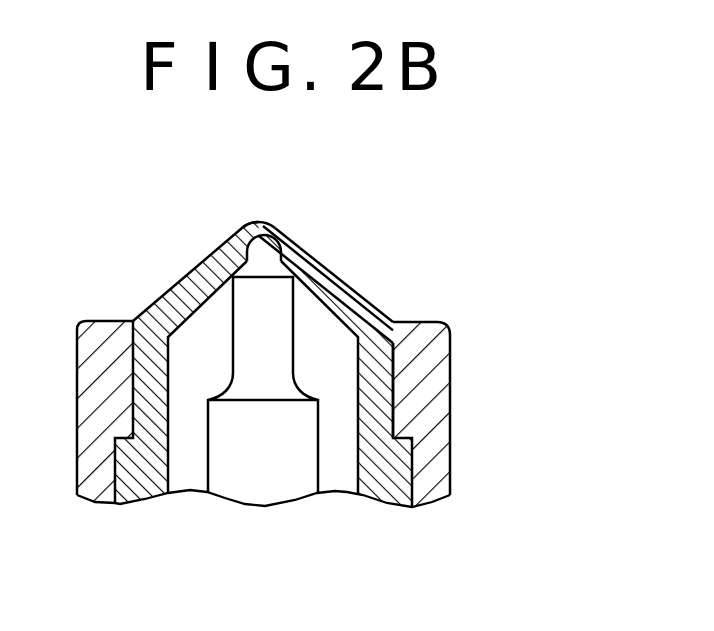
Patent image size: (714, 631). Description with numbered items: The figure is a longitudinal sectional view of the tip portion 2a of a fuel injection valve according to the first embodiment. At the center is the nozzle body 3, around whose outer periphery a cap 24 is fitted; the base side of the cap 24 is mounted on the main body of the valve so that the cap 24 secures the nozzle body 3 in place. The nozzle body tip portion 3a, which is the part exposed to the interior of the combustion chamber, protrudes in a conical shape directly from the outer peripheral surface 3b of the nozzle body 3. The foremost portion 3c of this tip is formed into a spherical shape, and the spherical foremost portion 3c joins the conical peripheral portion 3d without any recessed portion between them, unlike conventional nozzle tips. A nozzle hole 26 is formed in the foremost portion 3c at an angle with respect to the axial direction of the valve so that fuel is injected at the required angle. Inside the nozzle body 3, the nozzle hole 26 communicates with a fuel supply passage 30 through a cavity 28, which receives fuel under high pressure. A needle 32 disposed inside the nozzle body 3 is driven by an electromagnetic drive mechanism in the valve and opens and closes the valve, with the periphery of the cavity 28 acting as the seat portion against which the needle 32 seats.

The tip portion 2a is at (147, 241).
The nozzle body 3 is at (373, 493).
The nozzle body tip portion 3a is at (321, 259).
The outer peripheral surface 3b is at (397, 370).
The foremost portion 3c is at (267, 223).
The conical peripheral portion 3d is at (356, 290).
The cap 24 is at (423, 507).
The nozzle hole 26 is at (277, 222).
The cavity 28 is at (258, 250).
The fuel supply passage 30 is at (188, 483).
The needle 32 is at (265, 487).